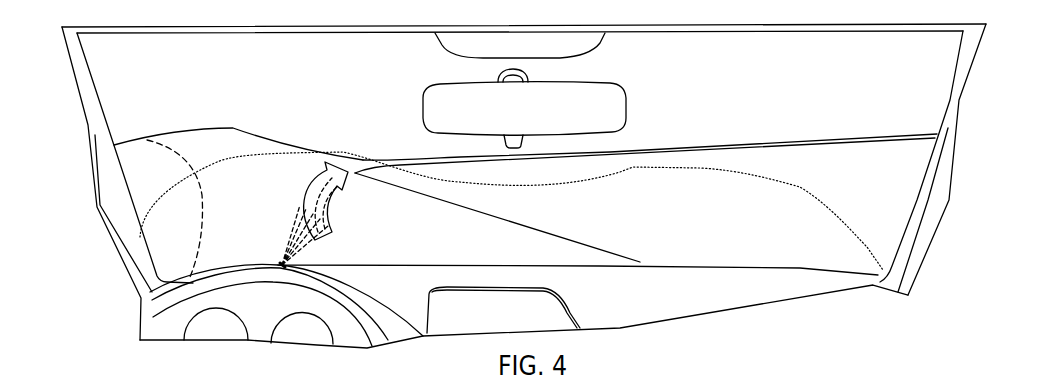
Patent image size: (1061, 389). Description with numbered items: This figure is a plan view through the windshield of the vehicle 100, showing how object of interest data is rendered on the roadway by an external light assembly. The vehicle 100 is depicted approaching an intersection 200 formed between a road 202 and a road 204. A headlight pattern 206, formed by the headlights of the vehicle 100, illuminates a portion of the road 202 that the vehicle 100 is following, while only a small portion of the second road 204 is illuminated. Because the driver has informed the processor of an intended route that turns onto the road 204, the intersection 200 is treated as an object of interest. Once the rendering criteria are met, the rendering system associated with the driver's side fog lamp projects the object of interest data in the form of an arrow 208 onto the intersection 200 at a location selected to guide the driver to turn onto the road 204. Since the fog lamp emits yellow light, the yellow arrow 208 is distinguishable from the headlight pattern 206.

The vehicle 100 is at (969, 88).
The intersection 200 is at (349, 122).
The road 202 is at (613, 252).
The road 204 is at (728, 143).
The headlight pattern 206 is at (800, 192).
The arrow 208 is at (303, 192).